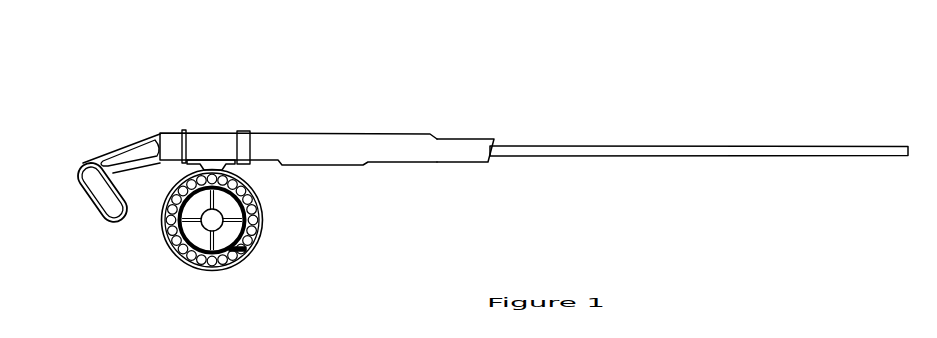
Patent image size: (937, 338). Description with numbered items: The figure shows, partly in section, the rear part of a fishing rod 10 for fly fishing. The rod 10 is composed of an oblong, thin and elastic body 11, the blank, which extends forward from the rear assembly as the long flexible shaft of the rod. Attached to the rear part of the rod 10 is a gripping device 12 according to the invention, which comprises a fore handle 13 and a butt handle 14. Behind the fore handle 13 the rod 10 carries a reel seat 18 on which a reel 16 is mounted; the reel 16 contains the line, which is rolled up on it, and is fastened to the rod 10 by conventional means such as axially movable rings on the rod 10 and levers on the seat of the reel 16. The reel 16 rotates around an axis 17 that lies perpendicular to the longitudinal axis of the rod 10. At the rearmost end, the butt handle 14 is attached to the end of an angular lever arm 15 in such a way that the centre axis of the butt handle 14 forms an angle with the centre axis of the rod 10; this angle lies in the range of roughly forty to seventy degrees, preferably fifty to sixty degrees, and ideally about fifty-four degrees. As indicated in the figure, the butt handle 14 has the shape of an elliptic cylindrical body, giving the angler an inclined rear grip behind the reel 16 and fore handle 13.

The fishing rod 10 is at (461, 127).
The body 11 is at (758, 147).
The gripping device 12 is at (332, 147).
The fore handle 13 is at (450, 141).
The butt handle 14 is at (78, 177).
The angular lever arm 15 is at (122, 147).
The reel 16 is at (253, 234).
The axis 17 is at (212, 221).
The reel seat 18 is at (212, 160).